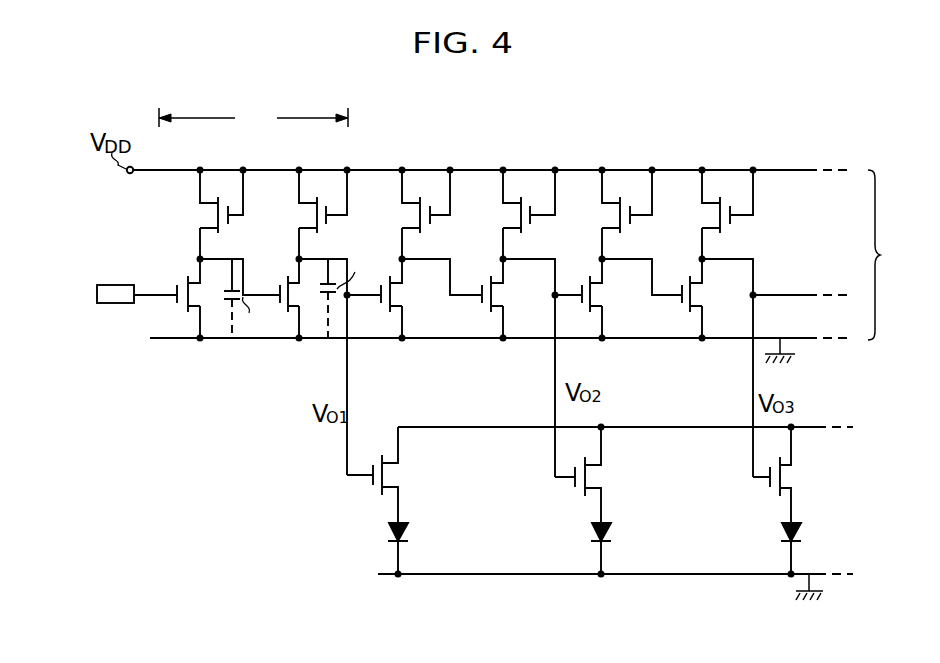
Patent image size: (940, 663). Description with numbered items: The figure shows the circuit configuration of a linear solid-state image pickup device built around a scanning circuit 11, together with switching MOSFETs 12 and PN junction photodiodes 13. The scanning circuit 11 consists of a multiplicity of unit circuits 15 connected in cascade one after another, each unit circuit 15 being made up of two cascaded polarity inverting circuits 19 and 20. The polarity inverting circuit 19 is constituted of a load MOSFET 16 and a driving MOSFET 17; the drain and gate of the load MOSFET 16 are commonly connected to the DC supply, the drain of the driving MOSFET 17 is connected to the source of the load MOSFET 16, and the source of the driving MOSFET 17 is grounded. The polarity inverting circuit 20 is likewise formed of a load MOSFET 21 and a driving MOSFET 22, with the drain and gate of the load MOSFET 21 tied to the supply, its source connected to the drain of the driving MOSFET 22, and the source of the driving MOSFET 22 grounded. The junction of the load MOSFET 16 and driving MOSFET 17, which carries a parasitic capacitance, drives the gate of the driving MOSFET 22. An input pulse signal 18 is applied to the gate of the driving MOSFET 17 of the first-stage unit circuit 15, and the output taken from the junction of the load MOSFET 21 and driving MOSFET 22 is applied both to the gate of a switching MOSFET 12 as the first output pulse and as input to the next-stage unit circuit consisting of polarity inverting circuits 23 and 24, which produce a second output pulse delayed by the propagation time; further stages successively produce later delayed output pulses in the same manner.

The scanning circuit 11 is at (880, 255).
The switching MOSFET 12 is at (386, 478).
The PN junction photodiode 13 is at (410, 533).
The unit circuit 15 is at (252, 118).
The load MOSFET 16 is at (207, 214).
The driving MOSFET 17 is at (186, 276).
The input pulse signal 18 is at (115, 285).
The polarity inverting circuit 19 is at (188, 279).
The polarity inverting circuit 20 is at (324, 322).
The load MOSFET 21 is at (306, 214).
The driving MOSFET 22 is at (283, 280).
The polarity inverting circuit 23 is at (445, 347).
The polarity inverting circuit 24 is at (532, 347).